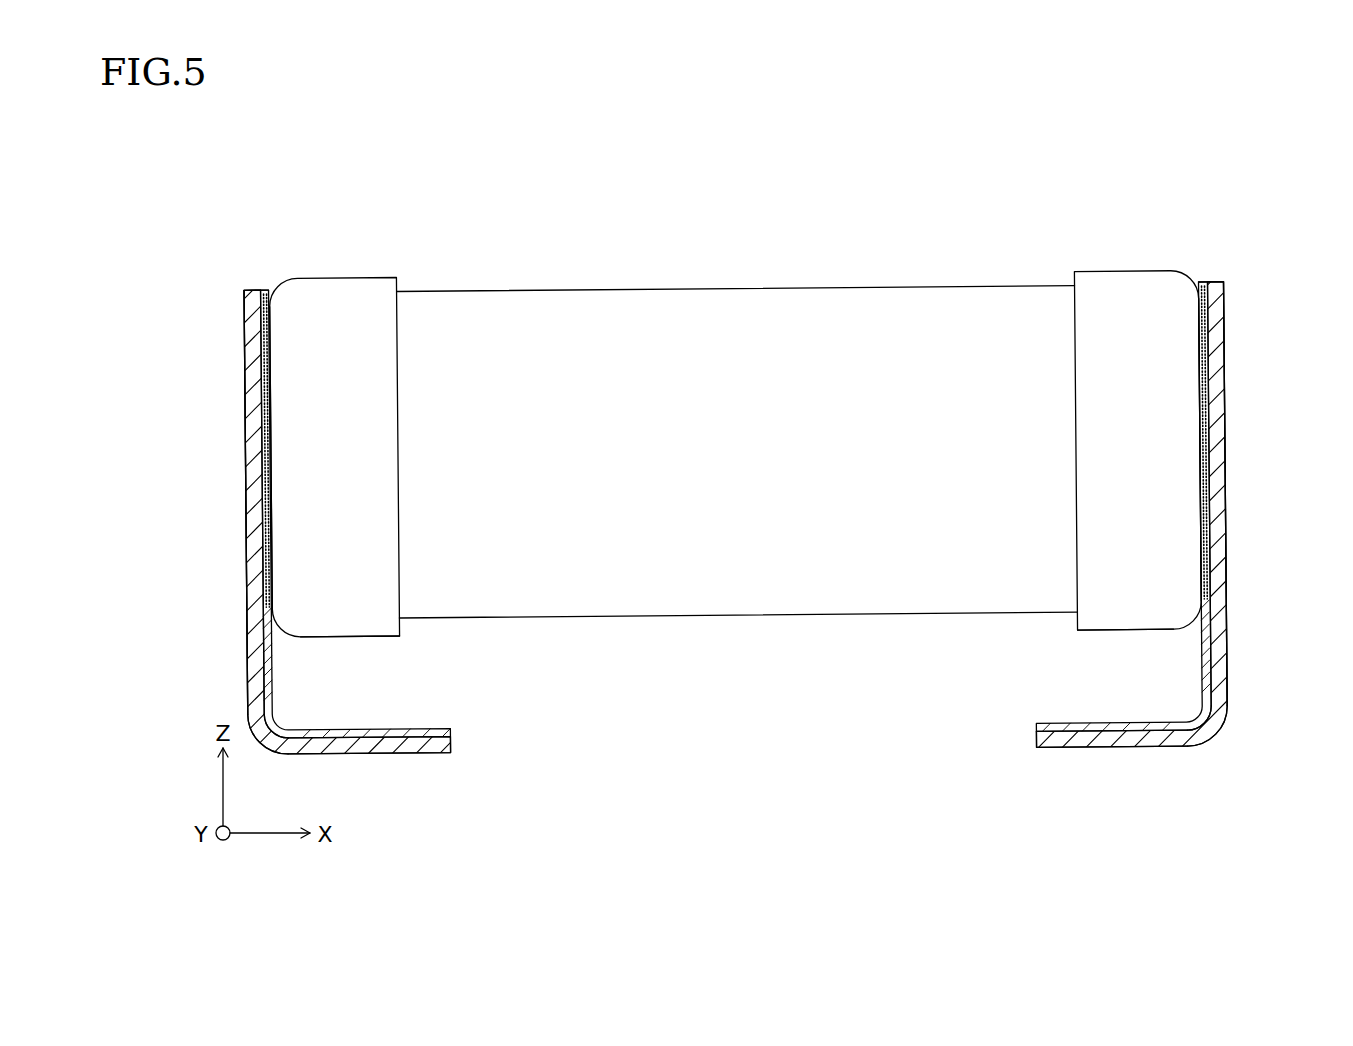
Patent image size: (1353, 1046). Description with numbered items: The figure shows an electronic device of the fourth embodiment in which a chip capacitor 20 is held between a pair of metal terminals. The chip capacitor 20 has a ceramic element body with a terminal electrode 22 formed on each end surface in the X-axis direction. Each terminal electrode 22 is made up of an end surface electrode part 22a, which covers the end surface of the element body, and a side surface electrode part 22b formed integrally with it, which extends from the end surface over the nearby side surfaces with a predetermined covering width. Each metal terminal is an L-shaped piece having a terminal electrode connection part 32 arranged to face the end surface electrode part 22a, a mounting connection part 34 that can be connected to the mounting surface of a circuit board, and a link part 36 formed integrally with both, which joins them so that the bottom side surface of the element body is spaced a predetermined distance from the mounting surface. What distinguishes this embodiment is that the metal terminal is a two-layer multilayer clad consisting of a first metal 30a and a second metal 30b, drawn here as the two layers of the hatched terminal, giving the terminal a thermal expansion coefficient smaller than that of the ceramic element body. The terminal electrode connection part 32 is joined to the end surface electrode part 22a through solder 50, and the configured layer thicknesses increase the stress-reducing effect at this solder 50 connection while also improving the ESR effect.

The chip capacitor 20 is at (680, 286).
The terminal electrode 22 is at (337, 306).
The end surface electrode part 22a is at (281, 462).
The side surface electrode part 22b is at (397, 625).
The first metal 30a is at (267, 300).
The second metal 30b is at (245, 350).
The terminal electrode connection part 32 is at (258, 578).
The mounting connection part 34 is at (397, 745).
The link part 36 is at (255, 688).
The solder 50 is at (283, 607).